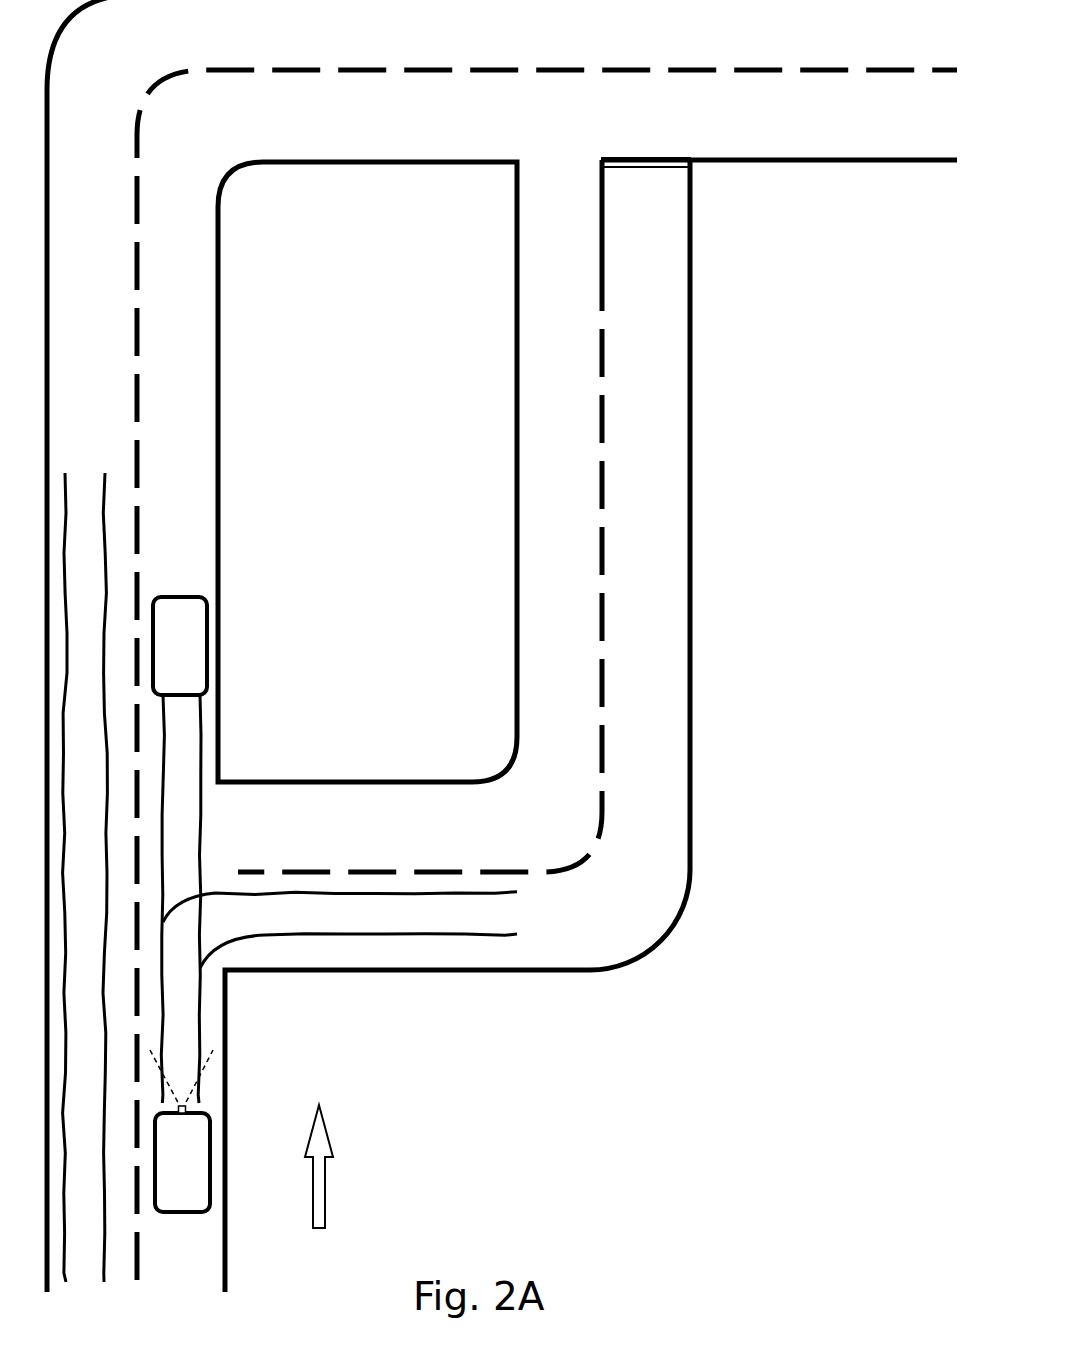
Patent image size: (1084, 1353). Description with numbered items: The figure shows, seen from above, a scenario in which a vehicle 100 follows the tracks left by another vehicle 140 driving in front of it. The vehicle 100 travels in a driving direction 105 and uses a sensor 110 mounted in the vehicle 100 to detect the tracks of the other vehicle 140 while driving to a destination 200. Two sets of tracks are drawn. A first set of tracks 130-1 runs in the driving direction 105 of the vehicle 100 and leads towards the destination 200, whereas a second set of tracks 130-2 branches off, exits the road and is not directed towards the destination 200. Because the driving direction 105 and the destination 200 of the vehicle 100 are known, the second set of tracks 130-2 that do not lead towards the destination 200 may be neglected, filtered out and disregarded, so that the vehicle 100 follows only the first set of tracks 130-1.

The vehicle 100 is at (198, 1167).
The driving direction 105 is at (347, 1166).
The sensor 110 is at (186, 1108).
The first set of tracks 130-1 is at (162, 807).
The second set of tracks 130-2 is at (320, 897).
The another vehicle 140 is at (197, 633).
The destination 200 is at (367, 472).